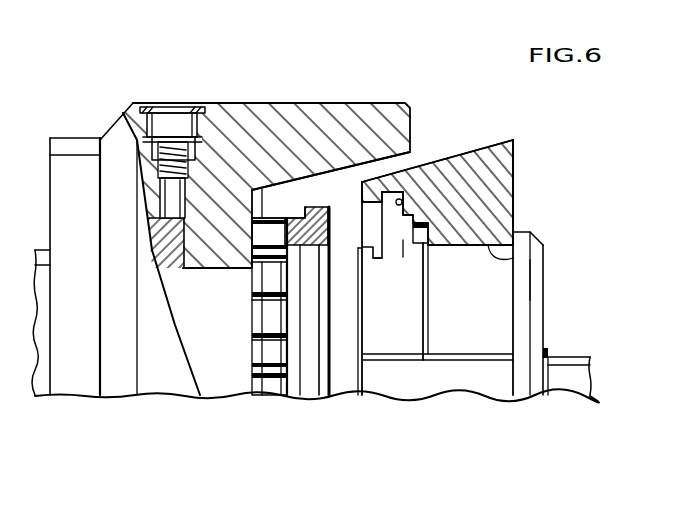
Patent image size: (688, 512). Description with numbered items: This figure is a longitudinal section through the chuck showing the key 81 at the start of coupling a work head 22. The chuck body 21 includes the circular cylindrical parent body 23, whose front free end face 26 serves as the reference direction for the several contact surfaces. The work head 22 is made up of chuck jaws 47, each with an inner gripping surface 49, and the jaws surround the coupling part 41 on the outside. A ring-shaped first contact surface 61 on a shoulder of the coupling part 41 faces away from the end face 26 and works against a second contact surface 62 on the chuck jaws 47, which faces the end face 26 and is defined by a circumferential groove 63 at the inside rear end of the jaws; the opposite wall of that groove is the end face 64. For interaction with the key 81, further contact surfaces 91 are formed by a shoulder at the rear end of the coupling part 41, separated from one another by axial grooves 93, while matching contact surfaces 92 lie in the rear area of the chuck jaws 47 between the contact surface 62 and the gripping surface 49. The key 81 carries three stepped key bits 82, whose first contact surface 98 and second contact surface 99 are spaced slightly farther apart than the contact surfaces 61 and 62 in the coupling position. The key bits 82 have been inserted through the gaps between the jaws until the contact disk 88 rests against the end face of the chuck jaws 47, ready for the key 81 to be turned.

The chuck body 21 is at (252, 58).
The work head 22 is at (488, 88).
The parent body 23 is at (227, 93).
The end face 26 is at (422, 158).
The coupling part 41 is at (321, 198).
The chuck jaws 47 is at (500, 154).
The gripping surface 49 is at (544, 247).
The first contact surface 61 is at (298, 207).
The second contact surface 62 is at (391, 192).
The circumferential groove 63 is at (396, 218).
The end face 64 is at (386, 198).
The key 81 is at (575, 311).
The key bits 82 is at (356, 315).
The contact disk 88 is at (538, 280).
The second contact surfaces 91 is at (295, 256).
The second contact surfaces 92 is at (432, 247).
The axial grooves 93 is at (310, 254).
The first contact surface 98 is at (380, 256).
The second contact surface 99 is at (408, 242).